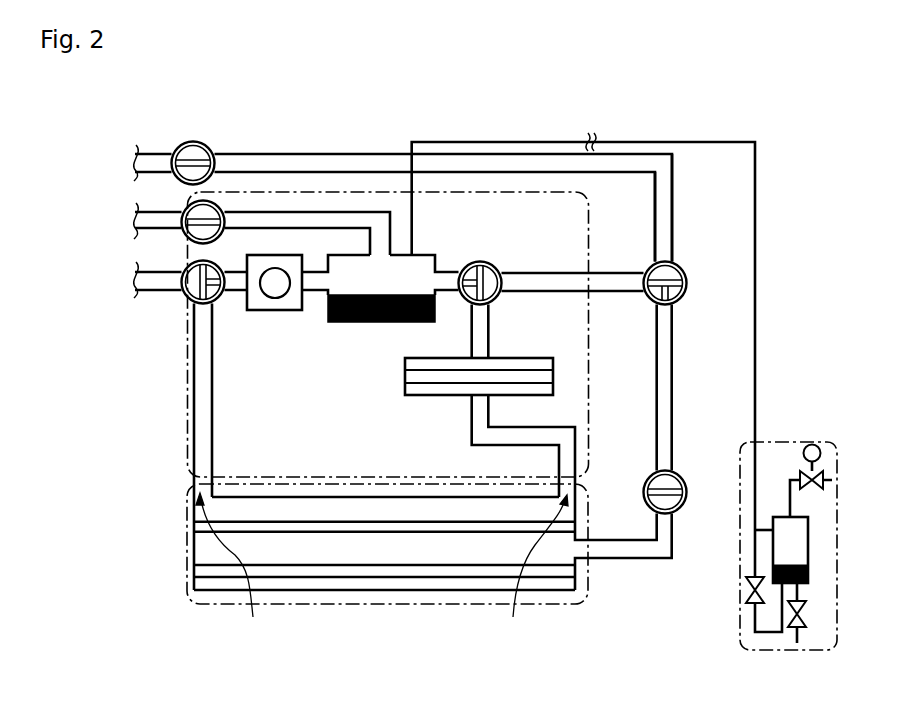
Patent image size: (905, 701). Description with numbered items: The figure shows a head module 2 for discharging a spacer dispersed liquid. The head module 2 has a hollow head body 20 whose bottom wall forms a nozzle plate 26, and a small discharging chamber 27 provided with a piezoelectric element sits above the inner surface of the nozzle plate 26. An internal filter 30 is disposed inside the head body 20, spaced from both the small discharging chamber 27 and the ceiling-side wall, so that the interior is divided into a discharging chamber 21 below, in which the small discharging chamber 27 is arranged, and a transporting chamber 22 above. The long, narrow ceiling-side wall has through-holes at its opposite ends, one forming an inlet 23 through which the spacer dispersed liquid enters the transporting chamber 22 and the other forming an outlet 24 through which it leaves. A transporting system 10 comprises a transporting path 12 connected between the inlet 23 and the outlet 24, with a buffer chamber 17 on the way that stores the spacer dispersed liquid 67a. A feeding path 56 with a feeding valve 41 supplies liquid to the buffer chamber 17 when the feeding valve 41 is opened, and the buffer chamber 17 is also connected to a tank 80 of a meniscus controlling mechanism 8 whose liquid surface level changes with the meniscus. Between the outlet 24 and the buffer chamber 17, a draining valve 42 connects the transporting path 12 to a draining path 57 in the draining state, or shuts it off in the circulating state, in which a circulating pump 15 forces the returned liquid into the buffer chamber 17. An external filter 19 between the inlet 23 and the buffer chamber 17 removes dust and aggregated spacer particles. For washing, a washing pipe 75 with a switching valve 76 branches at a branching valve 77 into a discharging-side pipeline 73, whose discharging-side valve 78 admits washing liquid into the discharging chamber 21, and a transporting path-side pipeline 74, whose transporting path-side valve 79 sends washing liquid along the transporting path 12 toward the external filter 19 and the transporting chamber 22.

The head module 2 is at (67, 112).
The meniscus controlling mechanism 8 is at (740, 615).
The transporting system 10 is at (187, 434).
The transporting path 12 is at (214, 432).
The circulating pump 15 is at (268, 311).
The buffer chamber 17 is at (432, 253).
The external filter 19 is at (553, 377).
The head body 20 is at (185, 552).
The discharging chamber 21 is at (413, 555).
The transporting chamber 22 is at (421, 500).
The inlet 23 is at (534, 570).
The outlet 24 is at (233, 569).
The nozzle plate 26 is at (194, 588).
The small discharging chamber 27 is at (196, 577).
The internal filter 30 is at (325, 526).
The feeding valve 41 is at (183, 234).
The draining valve 42 is at (189, 298).
The feeding path 56 is at (145, 211).
The draining path 57 is at (167, 283).
The spacer dispersed liquid 67a is at (360, 322).
The discharging-side pipeline 73 is at (673, 355).
The transporting path-side pipeline 74 is at (623, 272).
The washing pipe 75 is at (674, 182).
The switching valve 76 is at (175, 151).
The branching valve 77 is at (685, 268).
The discharging-side valve 78 is at (686, 481).
The transporting path-side valve 79 is at (506, 264).
The tank 80 is at (755, 530).